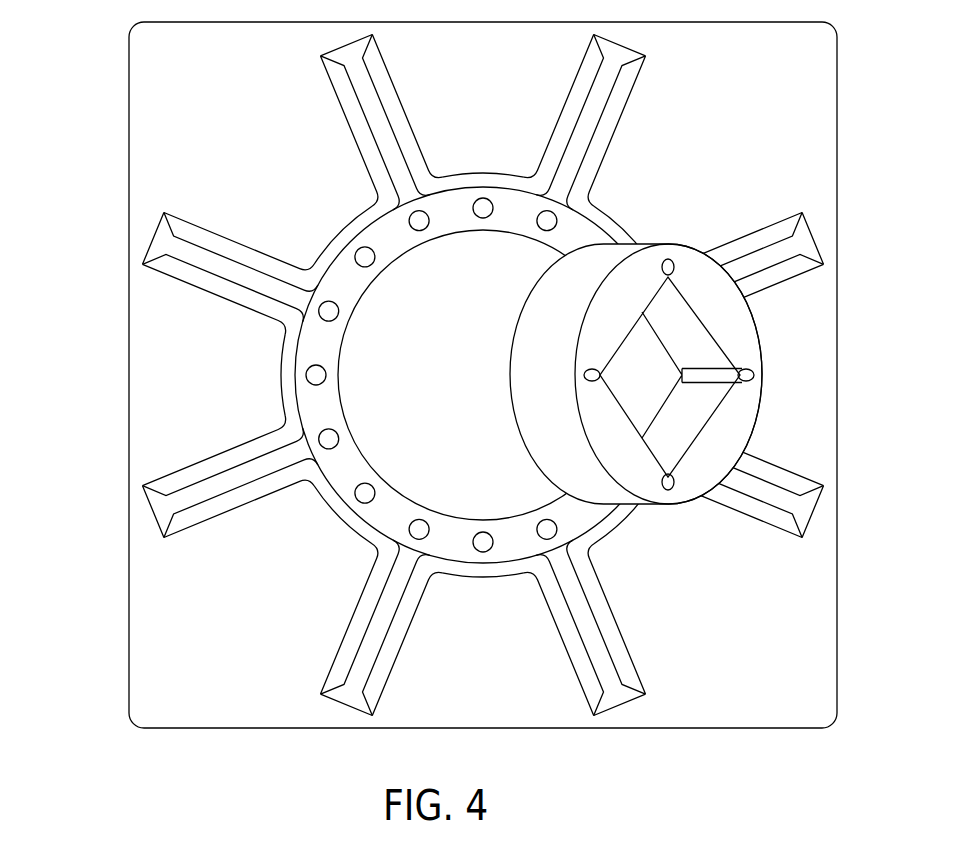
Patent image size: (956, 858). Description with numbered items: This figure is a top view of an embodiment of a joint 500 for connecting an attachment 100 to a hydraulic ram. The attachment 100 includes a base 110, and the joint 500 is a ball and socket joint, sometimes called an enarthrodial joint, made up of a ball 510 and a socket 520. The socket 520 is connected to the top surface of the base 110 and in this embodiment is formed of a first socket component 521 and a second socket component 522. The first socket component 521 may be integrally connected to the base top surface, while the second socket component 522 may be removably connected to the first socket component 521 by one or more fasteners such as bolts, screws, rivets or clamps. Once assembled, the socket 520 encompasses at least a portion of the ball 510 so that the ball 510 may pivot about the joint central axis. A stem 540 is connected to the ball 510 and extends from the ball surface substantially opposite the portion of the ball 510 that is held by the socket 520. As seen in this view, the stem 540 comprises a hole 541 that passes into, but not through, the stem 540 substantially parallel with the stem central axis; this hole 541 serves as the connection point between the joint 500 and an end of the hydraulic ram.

The attachment 100 is at (428, 375).
The base 110 is at (454, 375).
The joint 500 is at (483, 375).
The ball 510 is at (483, 318).
The socket 520 is at (478, 359).
The first socket component 521 is at (483, 375).
The second socket component 522 is at (483, 418).
The stem 540 is at (636, 339).
The hole 541 is at (695, 374).